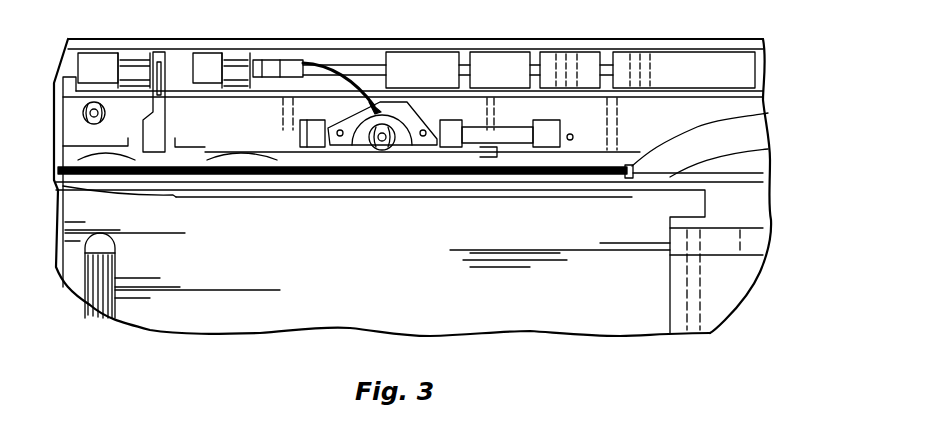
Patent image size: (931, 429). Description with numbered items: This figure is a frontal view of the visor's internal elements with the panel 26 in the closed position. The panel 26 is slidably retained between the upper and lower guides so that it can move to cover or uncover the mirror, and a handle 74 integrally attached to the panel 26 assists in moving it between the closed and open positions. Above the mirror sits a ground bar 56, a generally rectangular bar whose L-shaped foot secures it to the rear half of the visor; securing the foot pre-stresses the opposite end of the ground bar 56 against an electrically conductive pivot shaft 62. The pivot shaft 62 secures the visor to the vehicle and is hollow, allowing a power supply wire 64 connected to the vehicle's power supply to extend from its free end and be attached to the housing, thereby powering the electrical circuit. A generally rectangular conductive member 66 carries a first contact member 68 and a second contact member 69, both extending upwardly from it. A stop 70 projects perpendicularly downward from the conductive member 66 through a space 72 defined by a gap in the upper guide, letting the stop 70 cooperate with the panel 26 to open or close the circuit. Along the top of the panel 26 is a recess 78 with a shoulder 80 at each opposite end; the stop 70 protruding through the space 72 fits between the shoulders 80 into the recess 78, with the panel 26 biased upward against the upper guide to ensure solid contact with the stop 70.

The panel 26 is at (196, 323).
The ground bar 56 is at (151, 112).
The pivot shaft 62 is at (301, 50).
The power supply wire 64 is at (356, 103).
The conductive member 66 is at (402, 173).
The first contact member 68 is at (63, 146).
The second contact member 69 is at (204, 186).
The stop 70 is at (768, 113).
The space 72 is at (768, 149).
The handle 74 is at (82, 302).
The recess 78 is at (557, 200).
The shoulder 80 is at (60, 172).